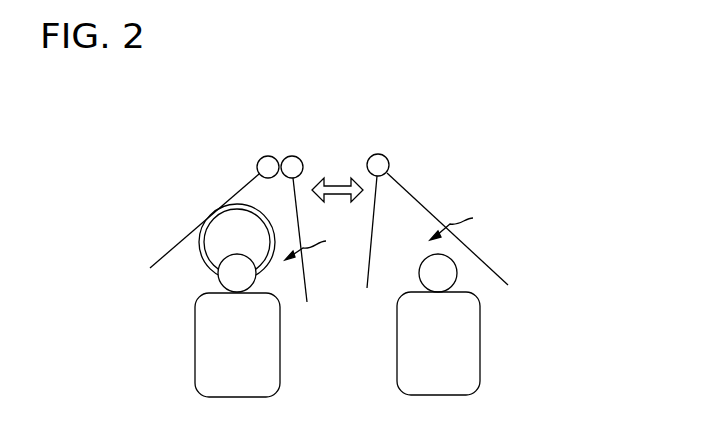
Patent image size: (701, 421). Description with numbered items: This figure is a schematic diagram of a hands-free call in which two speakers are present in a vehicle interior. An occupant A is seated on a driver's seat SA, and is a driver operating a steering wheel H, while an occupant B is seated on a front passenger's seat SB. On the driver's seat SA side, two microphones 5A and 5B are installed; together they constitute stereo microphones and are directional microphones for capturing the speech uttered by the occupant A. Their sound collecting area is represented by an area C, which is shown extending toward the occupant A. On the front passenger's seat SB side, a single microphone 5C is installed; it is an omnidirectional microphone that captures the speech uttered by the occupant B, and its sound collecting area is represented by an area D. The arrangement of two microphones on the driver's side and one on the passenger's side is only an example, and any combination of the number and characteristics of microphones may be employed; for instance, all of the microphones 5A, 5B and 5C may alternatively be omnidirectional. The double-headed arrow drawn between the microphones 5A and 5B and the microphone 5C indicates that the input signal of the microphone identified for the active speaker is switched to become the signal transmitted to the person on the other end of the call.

The microphone 5A is at (297, 157).
The microphone 5B is at (262, 157).
The microphone 5C is at (389, 163).
The occupant A is at (218, 282).
The occupant B is at (457, 272).
The steering wheel H is at (271, 262).
The driver's seat SA is at (282, 373).
The front passenger's seat SB is at (482, 373).
The area C is at (315, 239).
The area D is at (462, 220).